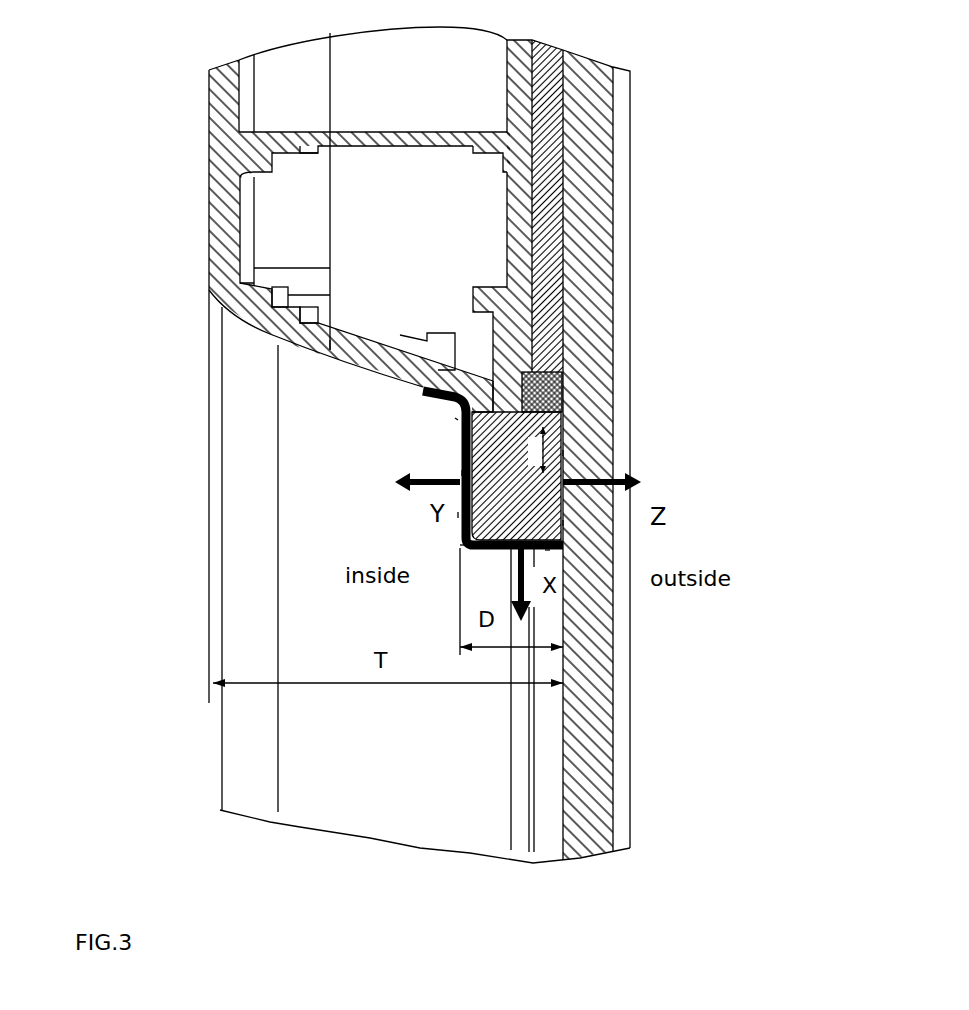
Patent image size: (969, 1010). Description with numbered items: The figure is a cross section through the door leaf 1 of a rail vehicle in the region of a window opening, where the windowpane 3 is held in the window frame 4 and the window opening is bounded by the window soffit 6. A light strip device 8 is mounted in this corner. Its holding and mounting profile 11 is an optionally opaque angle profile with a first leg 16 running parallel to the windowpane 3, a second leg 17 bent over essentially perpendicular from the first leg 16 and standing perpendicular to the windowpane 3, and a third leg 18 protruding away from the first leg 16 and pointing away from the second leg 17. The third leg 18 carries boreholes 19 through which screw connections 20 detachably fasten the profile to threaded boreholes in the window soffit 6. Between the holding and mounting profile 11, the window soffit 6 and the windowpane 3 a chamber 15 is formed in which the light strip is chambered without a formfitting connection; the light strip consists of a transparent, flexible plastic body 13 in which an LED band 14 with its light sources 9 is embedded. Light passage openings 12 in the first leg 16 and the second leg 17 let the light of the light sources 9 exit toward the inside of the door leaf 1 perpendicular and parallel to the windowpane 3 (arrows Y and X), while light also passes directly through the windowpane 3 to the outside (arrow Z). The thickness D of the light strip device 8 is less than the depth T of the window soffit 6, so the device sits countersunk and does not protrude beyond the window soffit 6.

The door leaf 1 is at (537, 450).
The windowpane 3 is at (597, 745).
The window frame 4 is at (518, 106).
The window soffit 6 is at (322, 366).
The light strip device 8 is at (446, 550).
The light sources 9 is at (540, 437).
The holding and mounting profile 11 is at (458, 515).
The light passage openings 12 is at (452, 472).
The plastic body 13 is at (540, 522).
The LED band 14 is at (563, 453).
The chamber 15 is at (493, 410).
The first leg 16 is at (455, 418).
The second leg 17 is at (547, 553).
The third leg 18 is at (445, 388).
The boreholes 19 is at (390, 352).
The screw connections 20 is at (390, 375).